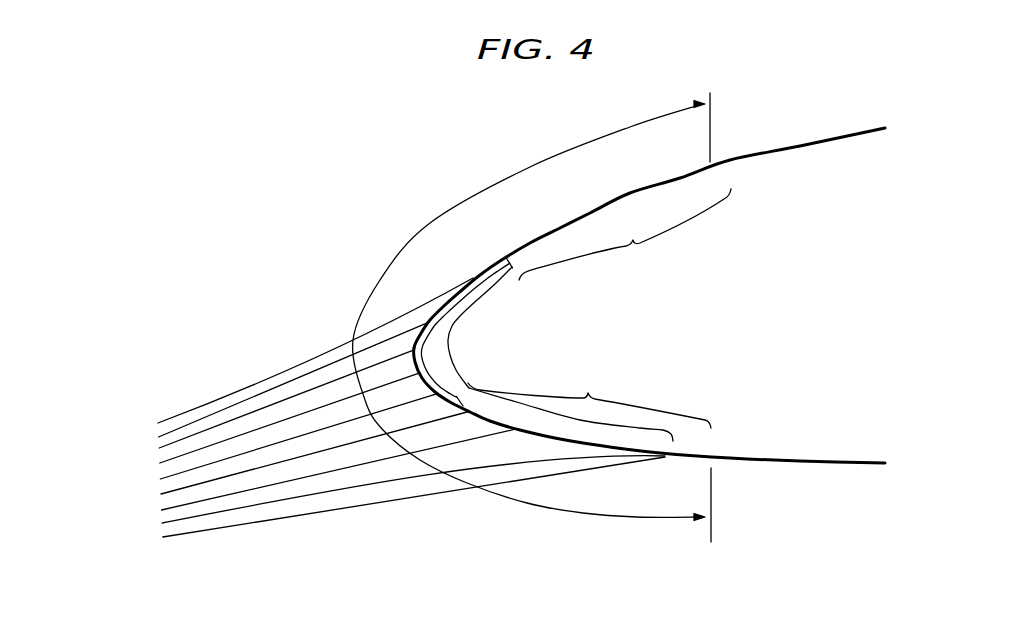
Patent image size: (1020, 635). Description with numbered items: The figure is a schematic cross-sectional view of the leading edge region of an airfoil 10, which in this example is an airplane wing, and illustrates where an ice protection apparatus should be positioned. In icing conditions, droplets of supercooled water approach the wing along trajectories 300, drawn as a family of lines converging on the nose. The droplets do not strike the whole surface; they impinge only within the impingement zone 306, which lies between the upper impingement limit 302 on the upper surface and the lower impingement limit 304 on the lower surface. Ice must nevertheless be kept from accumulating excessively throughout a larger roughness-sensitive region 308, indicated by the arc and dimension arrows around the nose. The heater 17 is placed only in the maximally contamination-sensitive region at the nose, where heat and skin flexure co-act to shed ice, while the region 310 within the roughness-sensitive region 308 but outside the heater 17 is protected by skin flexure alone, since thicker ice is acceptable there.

The airfoil 10 is at (777, 331).
The heater 17 is at (486, 301).
The trajectories 300 is at (187, 412).
The upper impingement limit 302 is at (495, 257).
The lower impingement limit 304 is at (677, 458).
The impingement zone 306 is at (450, 336).
The roughness-sensitive region 308 is at (420, 240).
The region outside heater periphery 310 is at (599, 308).